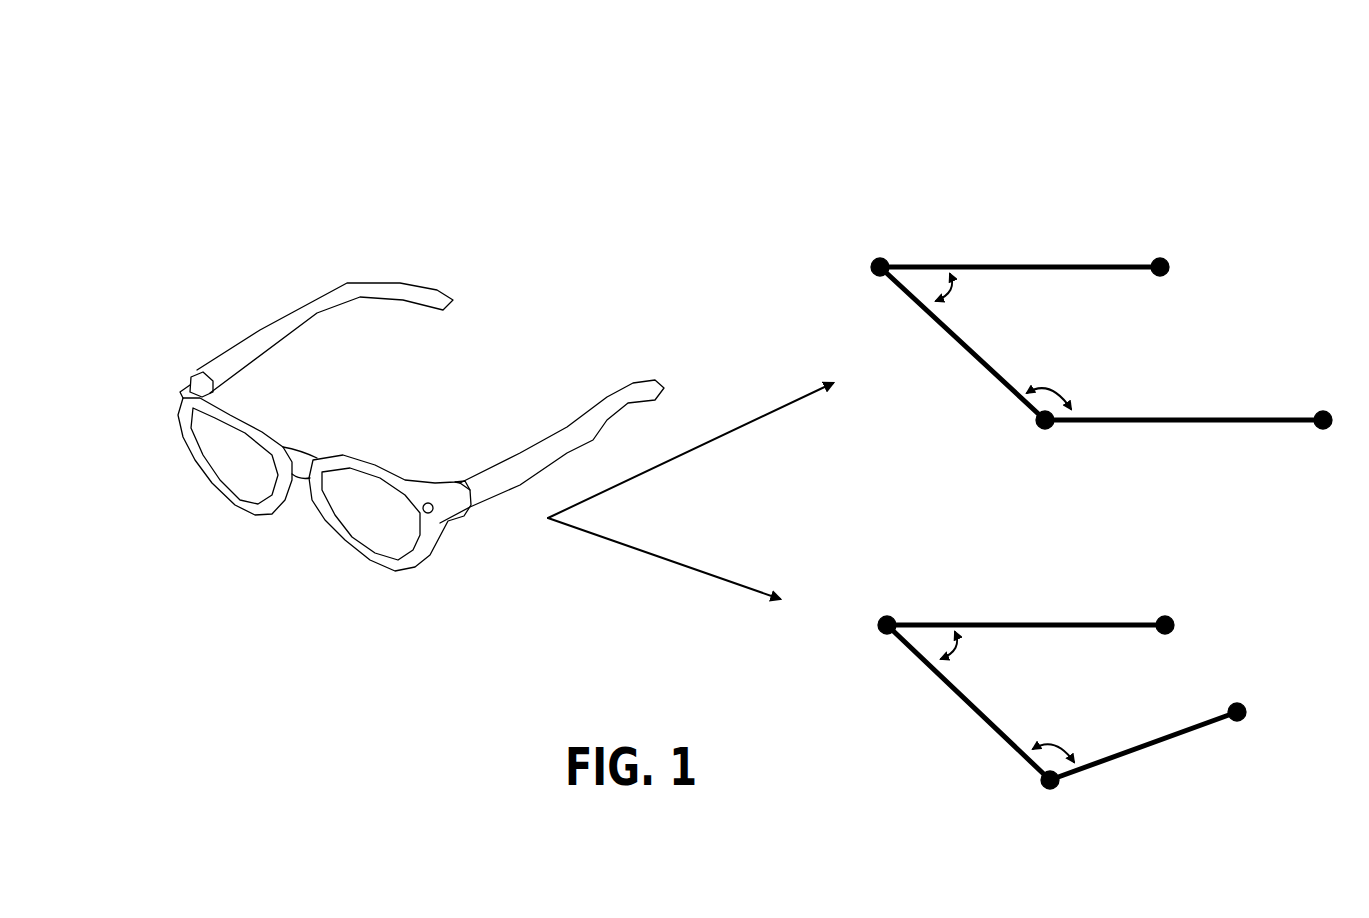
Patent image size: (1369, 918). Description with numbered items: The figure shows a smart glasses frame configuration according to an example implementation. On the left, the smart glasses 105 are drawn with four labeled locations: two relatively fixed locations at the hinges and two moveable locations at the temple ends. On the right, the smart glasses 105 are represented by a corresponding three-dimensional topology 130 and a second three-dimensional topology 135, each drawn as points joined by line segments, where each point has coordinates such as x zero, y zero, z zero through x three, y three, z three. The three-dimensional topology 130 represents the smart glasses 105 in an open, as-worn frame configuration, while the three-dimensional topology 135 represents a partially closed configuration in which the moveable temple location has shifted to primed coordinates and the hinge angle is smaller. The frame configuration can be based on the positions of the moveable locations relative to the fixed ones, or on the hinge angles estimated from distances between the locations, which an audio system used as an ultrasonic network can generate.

The smart glasses 105 is at (264, 266).
The three-dimensional topology 130 is at (1031, 221).
The three-dimensional topology 135 is at (1027, 581).